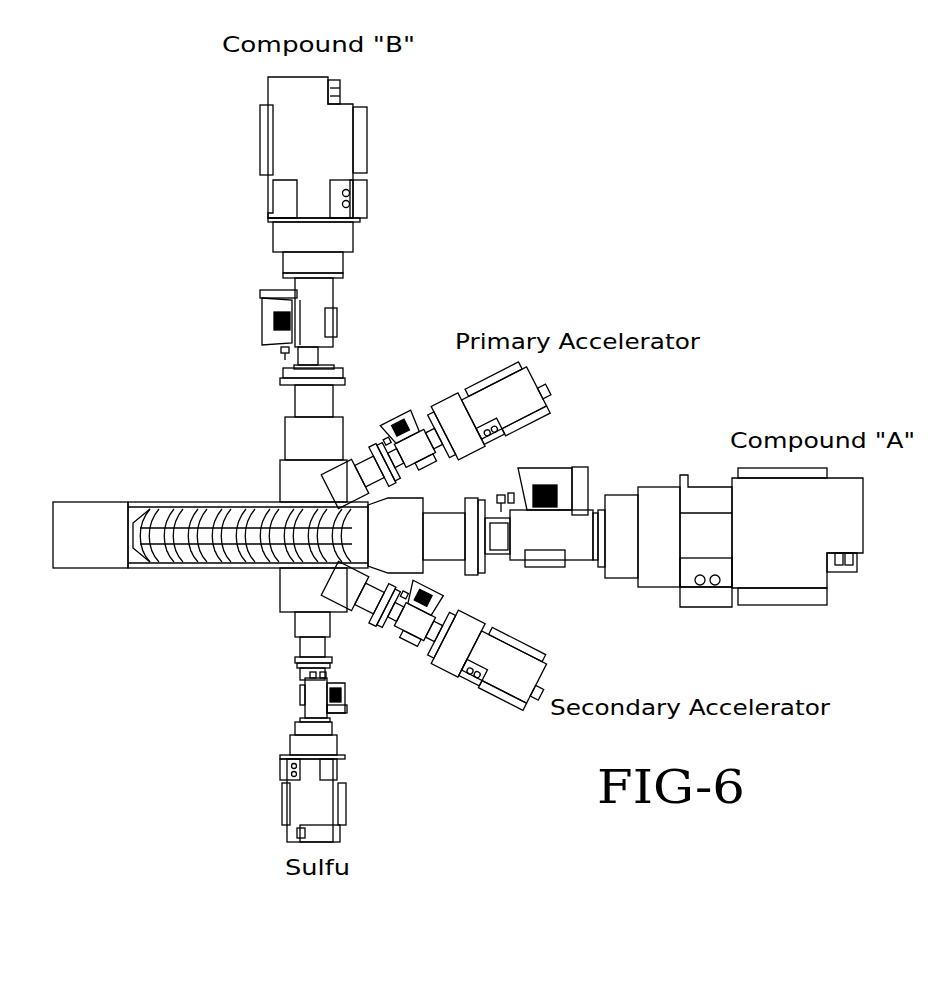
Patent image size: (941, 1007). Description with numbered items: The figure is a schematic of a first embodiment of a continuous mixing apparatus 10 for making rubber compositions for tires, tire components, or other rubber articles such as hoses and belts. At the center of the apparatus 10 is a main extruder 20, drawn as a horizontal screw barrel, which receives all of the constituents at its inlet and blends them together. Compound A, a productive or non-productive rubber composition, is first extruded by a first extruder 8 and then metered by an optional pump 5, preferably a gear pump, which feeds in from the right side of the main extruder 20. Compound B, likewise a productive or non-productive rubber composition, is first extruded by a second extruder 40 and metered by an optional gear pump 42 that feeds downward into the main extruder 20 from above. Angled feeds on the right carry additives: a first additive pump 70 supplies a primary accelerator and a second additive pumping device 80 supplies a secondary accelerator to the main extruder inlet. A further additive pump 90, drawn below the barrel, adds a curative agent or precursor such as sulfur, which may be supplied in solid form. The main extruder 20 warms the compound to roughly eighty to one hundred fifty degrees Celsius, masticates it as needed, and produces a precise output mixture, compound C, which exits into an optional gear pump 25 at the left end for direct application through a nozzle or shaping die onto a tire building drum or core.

The continuous mixing apparatus 10 is at (40, 378).
The main extruder 20 is at (206, 501).
The gear pump 25 is at (82, 500).
The gear pump 5 is at (437, 562).
The first extruder 8 is at (655, 487).
The second extruder 40 is at (262, 138).
The gear pump 42 is at (285, 425).
The first additive pump 70 is at (445, 407).
The second additive pumping device 80 is at (438, 665).
The additive pump 90 is at (292, 746).